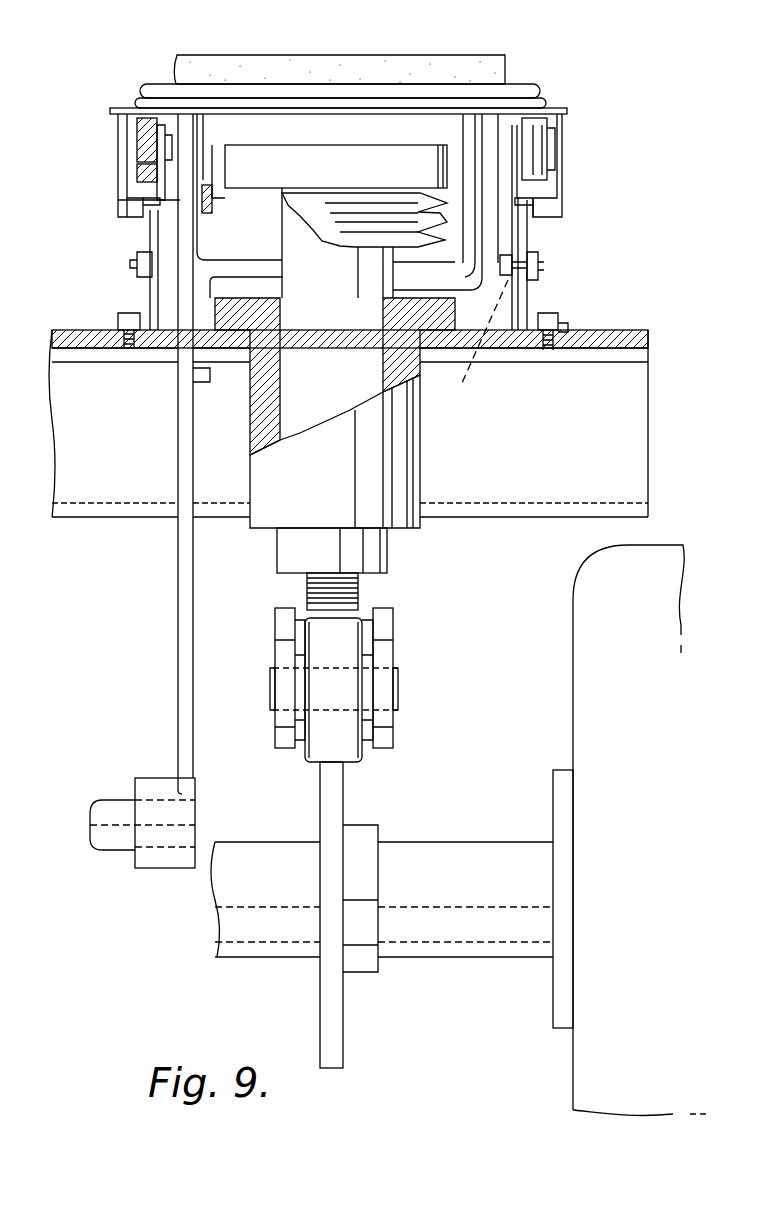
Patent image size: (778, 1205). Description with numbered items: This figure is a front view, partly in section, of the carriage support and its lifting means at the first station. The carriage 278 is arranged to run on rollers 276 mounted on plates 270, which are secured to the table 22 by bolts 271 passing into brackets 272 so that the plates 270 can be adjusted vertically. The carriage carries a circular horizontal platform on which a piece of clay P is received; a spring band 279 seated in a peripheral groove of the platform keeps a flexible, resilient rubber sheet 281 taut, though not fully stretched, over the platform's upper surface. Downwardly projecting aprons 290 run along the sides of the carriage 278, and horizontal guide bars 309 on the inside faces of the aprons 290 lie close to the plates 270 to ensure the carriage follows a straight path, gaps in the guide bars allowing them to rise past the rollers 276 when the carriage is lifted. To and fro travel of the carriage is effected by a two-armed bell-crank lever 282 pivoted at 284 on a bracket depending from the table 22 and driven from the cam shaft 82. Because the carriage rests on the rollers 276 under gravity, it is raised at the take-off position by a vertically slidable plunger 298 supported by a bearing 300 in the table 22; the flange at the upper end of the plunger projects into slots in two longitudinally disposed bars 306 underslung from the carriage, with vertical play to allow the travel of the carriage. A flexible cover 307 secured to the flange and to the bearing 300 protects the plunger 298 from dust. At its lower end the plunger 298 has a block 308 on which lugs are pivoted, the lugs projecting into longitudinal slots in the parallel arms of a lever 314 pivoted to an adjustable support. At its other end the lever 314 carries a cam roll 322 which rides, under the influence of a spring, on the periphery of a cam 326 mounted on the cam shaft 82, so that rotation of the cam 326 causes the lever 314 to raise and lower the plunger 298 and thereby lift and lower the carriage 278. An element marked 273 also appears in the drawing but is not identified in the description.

The platen P is at (328, 60).
The flexible, resilient rubber sheet 281 is at (517, 88).
The spring band 279 is at (540, 101).
The carriage 278 is at (562, 122).
The aprons 290 is at (117, 131).
The rollers 276 is at (536, 175).
The horizontal guide bars 309 is at (140, 201).
The plates 270 is at (152, 238).
The bolts 271 is at (540, 268).
The brackets 272 is at (520, 296).
The longitudinally disposed bars 306 is at (212, 212).
The two-armed bell-crank lever 282 is at (490, 178).
The flexible cover 307 is at (352, 226).
The table 22 is at (650, 314).
The vertically slidable plunger 298 is at (340, 366).
The rod 273 is at (476, 338).
The bearing 300 is at (378, 460).
The block 308 is at (365, 604).
The lever 314 is at (280, 634).
The cam roll 322 is at (336, 736).
The cam 326 is at (345, 1022).
The cam shaft 82 is at (469, 866).
The pivot 284 is at (122, 842).